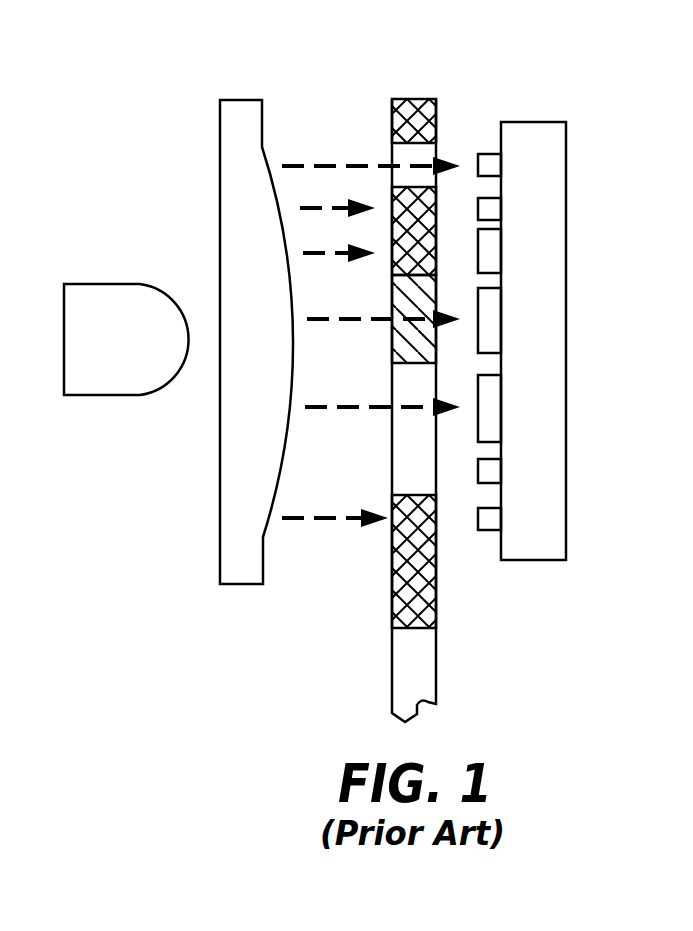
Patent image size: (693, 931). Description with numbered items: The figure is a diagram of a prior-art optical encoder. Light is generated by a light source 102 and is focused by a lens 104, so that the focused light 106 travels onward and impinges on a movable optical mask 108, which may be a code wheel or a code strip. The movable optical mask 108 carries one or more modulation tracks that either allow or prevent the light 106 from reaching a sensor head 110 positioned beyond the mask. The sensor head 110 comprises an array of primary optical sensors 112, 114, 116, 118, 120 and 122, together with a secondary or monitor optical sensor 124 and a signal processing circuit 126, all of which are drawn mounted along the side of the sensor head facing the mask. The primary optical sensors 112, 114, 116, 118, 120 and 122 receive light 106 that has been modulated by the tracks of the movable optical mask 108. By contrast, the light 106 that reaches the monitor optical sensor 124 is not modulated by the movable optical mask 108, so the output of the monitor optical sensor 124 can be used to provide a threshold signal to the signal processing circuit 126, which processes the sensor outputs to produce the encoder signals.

The light source 102 is at (112, 284).
The lens 104 is at (232, 100).
The focused light 106 is at (360, 163).
The movable optical mask 108 is at (405, 99).
The sensor head 110 is at (548, 615).
The primary optical sensor 112 is at (492, 165).
The primary optical sensor 114 is at (492, 208).
The primary optical sensor 116 is at (492, 252).
The primary optical sensor 118 is at (492, 320).
The primary optical sensor 120 is at (492, 407).
The primary optical sensor 122 is at (492, 519).
The monitor optical sensor 124 is at (492, 471).
The signal processing circuit 126 is at (532, 122).